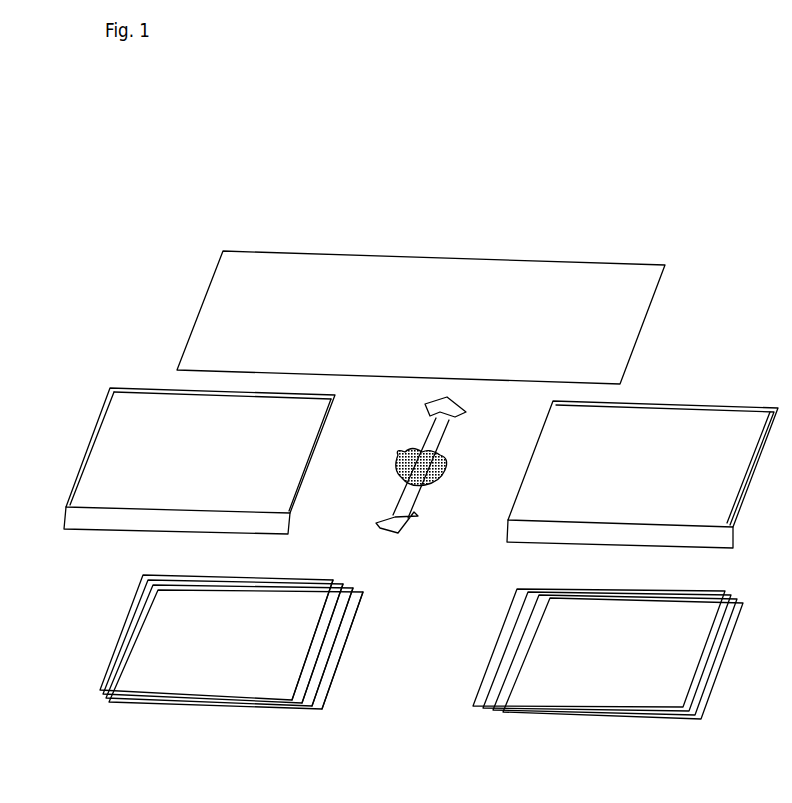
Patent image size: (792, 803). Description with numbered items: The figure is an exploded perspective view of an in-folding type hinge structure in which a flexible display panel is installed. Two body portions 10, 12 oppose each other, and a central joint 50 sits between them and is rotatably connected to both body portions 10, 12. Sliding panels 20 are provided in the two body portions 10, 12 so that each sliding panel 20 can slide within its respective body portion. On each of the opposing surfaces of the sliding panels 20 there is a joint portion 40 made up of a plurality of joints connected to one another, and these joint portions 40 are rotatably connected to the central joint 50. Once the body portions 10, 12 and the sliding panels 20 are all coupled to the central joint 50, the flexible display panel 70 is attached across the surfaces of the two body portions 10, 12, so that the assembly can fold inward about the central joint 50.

The body portion 10 is at (627, 430).
The body portion 12 is at (157, 423).
The sliding panel 20 is at (230, 610).
The joint portion 40 is at (330, 653).
The central joint 50 is at (413, 497).
The flexible display panel 70 is at (588, 330).